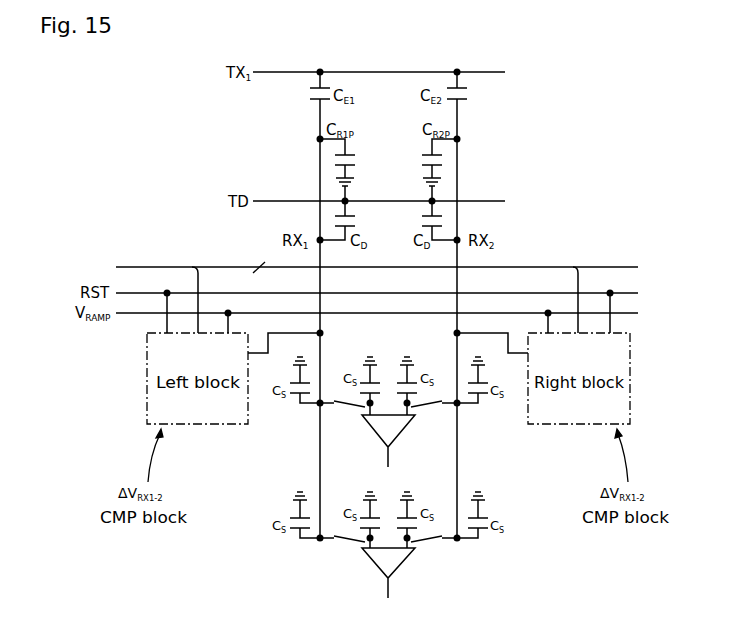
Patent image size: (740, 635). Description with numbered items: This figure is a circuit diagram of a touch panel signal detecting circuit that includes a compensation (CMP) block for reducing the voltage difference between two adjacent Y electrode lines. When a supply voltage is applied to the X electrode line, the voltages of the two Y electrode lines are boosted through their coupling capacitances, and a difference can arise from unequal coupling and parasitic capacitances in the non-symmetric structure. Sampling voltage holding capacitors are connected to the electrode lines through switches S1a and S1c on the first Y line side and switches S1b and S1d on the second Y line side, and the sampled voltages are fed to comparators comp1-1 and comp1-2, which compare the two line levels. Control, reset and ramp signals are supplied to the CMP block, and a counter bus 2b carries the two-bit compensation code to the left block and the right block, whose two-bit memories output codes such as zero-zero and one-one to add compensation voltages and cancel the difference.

The counter bus 2b is at (338, 264).
The switch S1a is at (342, 415).
The switch S1b is at (434, 415).
The switch S1c is at (342, 550).
The switch S1d is at (434, 550).
The comparator comp1-1 is at (387, 444).
The comparator comp1-2 is at (387, 579).